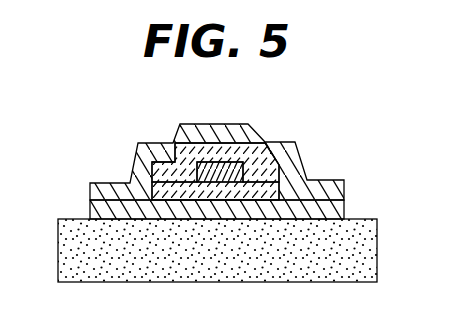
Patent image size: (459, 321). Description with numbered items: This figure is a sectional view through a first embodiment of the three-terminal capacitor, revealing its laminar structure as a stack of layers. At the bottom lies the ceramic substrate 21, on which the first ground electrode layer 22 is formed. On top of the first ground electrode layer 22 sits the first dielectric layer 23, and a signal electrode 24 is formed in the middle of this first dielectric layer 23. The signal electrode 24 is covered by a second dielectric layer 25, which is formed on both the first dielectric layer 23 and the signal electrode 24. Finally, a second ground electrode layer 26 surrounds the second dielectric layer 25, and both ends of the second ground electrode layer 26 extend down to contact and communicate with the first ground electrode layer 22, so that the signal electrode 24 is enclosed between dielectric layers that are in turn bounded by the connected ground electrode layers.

The ceramic substrate 21 is at (362, 249).
The first ground electrode layer 22 is at (340, 208).
The first dielectric layer 23 is at (267, 187).
The signal electrode 24 is at (240, 163).
The second dielectric layer 25 is at (237, 143).
The second ground electrode layer 26 is at (204, 124).